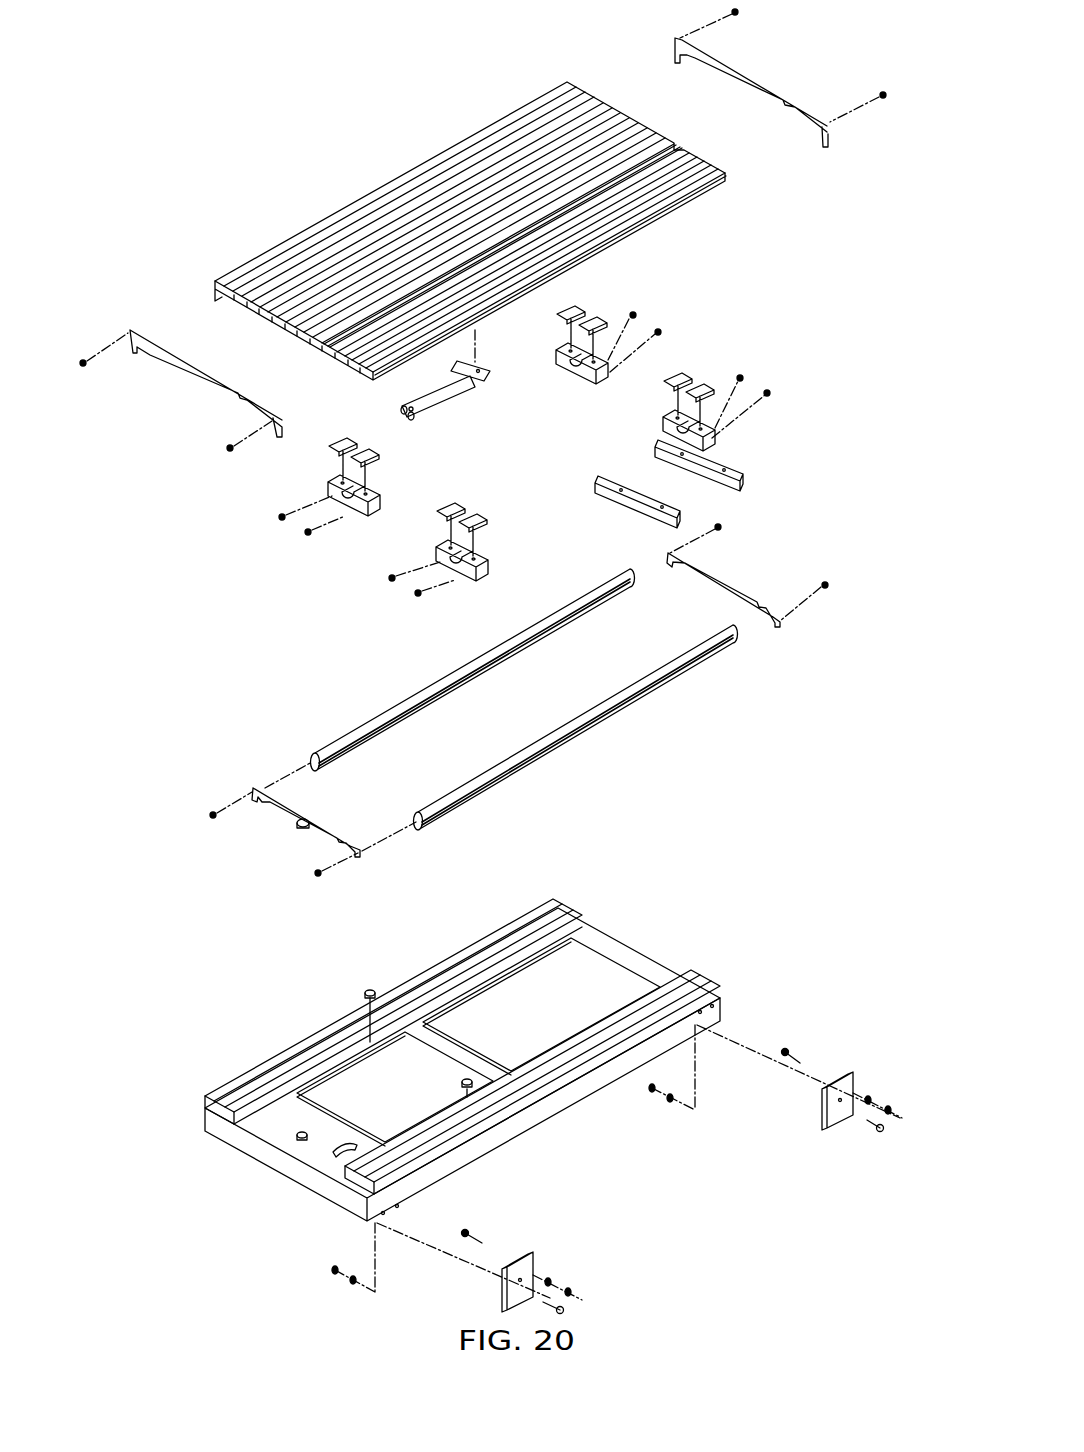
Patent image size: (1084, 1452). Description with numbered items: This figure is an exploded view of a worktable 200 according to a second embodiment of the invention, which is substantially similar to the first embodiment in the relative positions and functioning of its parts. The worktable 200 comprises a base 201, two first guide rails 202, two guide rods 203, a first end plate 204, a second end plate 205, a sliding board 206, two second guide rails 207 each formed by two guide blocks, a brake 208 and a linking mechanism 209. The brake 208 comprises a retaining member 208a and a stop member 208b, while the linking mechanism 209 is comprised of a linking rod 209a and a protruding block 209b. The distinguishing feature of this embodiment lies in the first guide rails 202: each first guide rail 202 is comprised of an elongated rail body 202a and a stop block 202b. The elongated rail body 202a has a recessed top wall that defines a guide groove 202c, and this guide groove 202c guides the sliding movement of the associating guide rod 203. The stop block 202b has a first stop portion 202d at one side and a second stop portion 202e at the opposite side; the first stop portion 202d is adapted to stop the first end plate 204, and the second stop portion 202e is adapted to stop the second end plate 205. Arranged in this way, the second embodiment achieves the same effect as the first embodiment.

The worktable 200 is at (255, 158).
The base 201 is at (312, 1180).
The first guide rail 202 is at (725, 978).
The elongated rail body 202a is at (205, 1115).
The stop block 202b is at (365, 992).
The guide groove 202c is at (265, 1068).
The first stop portion 202d is at (372, 988).
The second stop portion 202e is at (368, 1002).
The guide rod 203 is at (412, 700).
The first end plate 204 is at (728, 590).
The second end plate 205 is at (287, 820).
The sliding board 206 is at (420, 178).
The second guide rail 207 is at (558, 362).
The brake 208 is at (298, 808).
The retaining member 208a is at (312, 822).
The stop member 208b is at (298, 1137).
The linking mechanism 209 is at (492, 352).
The linking rod 209a is at (400, 406).
The protruding block 209b is at (378, 1185).